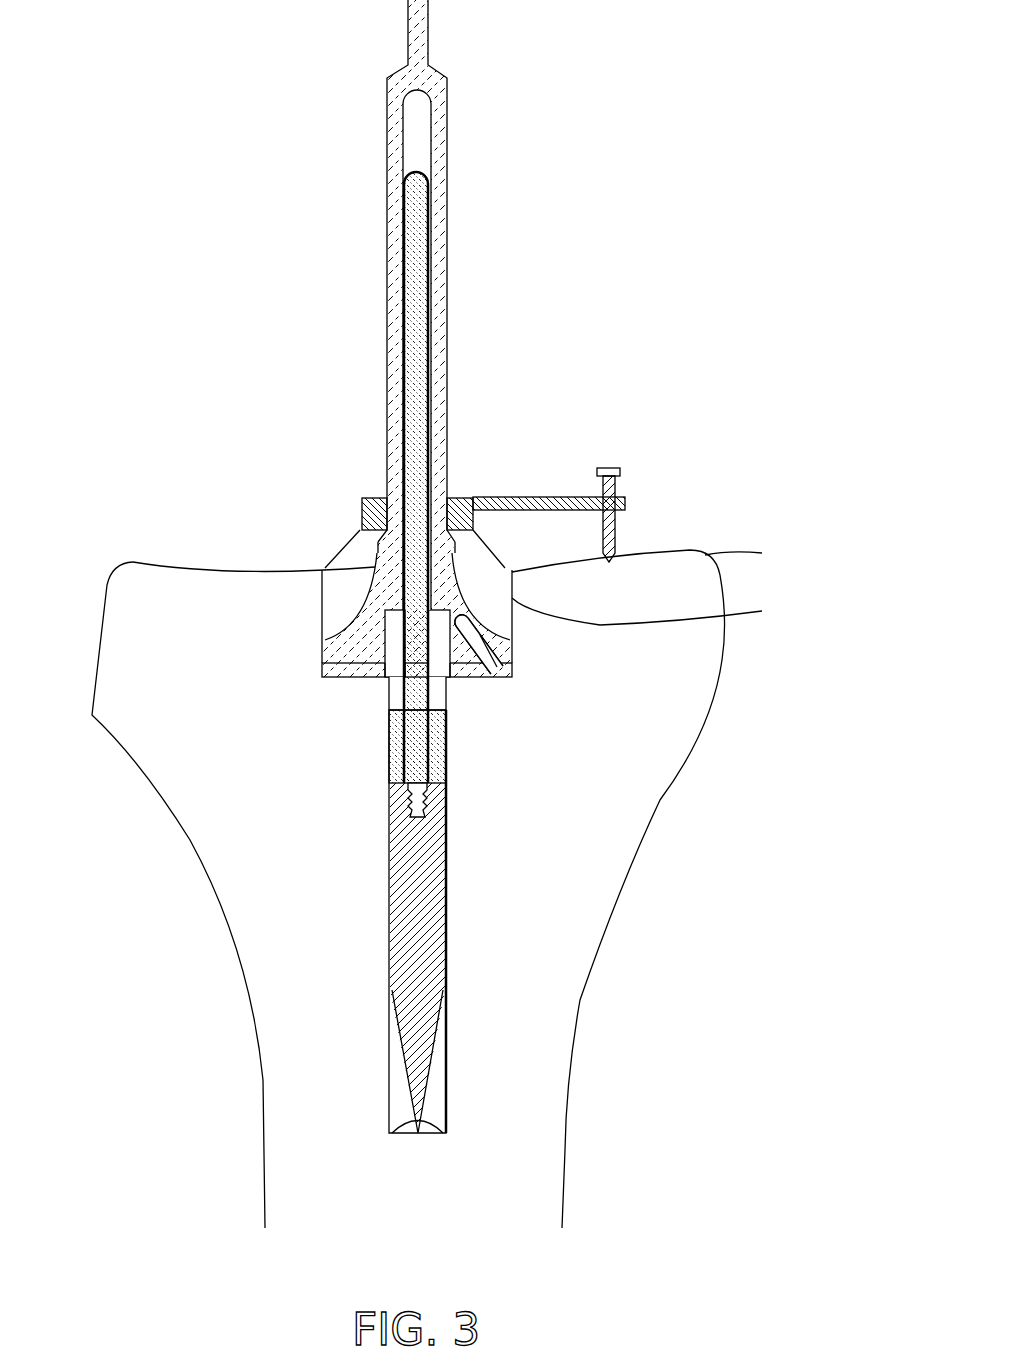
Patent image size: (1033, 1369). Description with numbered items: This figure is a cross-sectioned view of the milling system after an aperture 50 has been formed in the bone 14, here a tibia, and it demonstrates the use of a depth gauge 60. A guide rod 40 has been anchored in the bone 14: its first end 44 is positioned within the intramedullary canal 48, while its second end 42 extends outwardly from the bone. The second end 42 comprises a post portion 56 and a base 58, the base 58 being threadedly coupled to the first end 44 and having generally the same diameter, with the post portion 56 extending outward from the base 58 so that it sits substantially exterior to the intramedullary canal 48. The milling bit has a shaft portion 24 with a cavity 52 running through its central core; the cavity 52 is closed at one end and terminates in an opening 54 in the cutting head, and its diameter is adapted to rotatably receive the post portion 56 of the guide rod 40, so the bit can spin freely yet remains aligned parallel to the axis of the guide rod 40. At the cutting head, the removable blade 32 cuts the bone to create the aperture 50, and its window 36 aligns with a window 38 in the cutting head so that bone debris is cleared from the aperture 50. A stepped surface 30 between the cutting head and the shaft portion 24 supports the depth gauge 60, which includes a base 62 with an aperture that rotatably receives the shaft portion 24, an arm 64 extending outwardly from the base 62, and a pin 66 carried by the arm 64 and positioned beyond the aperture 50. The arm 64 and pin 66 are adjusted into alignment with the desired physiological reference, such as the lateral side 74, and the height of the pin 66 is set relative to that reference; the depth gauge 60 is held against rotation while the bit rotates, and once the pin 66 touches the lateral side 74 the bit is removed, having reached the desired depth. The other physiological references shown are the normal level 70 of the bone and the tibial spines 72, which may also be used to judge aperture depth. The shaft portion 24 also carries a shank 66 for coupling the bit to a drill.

The bone 14 is at (700, 553).
The shaft portion 24 is at (442, 262).
The stepped surface 30 is at (362, 532).
The removable blade 32 is at (333, 680).
The window 36 is at (492, 678).
The window 38 is at (478, 638).
The guide rod 40 is at (418, 200).
The second end 42 is at (388, 750).
The first end 44 is at (430, 955).
The intramedullary canal 48 is at (445, 1080).
The aperture 50 is at (515, 590).
The cavity 52 is at (418, 120).
The opening 54 is at (447, 677).
The post portion 56 is at (420, 358).
The base 58 is at (432, 758).
The depth gauge 60 is at (518, 475).
The base 62 is at (470, 497).
The arm 64 is at (557, 497).
The pin 66 is at (620, 478).
The normal level 70 is at (322, 602).
The tibial spines 72 is at (365, 528).
The lateral side 74 is at (640, 558).